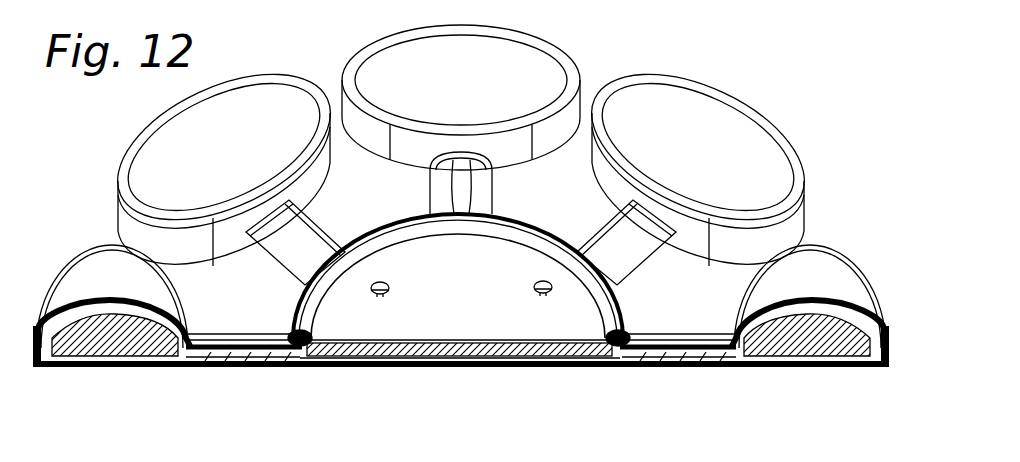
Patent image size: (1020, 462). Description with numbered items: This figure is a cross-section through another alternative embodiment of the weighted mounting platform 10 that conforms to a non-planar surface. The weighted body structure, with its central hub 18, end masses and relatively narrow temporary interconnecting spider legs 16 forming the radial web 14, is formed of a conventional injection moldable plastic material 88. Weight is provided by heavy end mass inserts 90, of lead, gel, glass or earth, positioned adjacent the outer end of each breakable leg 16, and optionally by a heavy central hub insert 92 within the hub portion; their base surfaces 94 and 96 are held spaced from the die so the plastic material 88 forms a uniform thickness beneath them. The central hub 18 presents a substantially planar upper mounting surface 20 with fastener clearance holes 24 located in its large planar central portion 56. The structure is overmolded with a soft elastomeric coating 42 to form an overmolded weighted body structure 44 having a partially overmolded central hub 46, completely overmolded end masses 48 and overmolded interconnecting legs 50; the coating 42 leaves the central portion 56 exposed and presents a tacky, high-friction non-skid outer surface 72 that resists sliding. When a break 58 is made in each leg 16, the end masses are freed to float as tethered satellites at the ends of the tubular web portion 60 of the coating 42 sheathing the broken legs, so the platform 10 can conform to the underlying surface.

The weighted mounting platform 10 is at (88, 217).
The web 14 is at (610, 232).
The breakable spider legs 16 is at (272, 368).
The central hub 18 is at (428, 248).
The upper mounting surface 20 is at (545, 267).
The fastener clearance holes 24 is at (371, 295).
The coating 42 is at (552, 368).
The overmolded weighted body structure 44 is at (772, 105).
The overmolded central hub 46 is at (392, 233).
The overmolded end masses 48 is at (468, 86).
The overmolded interconnecting legs 50 is at (327, 237).
The central portion of the upper mounting surface 56 is at (476, 309).
The break 58 is at (237, 368).
The tubular web portion 60 is at (262, 333).
The outer surface 72 is at (617, 367).
The injection moldable plastic material 88 is at (303, 357).
The end mass inserts 90 is at (120, 345).
The central hub insert 92 is at (493, 363).
The base surface of end mass insert 94 is at (157, 360).
The base surface of central hub insert 96 is at (420, 363).